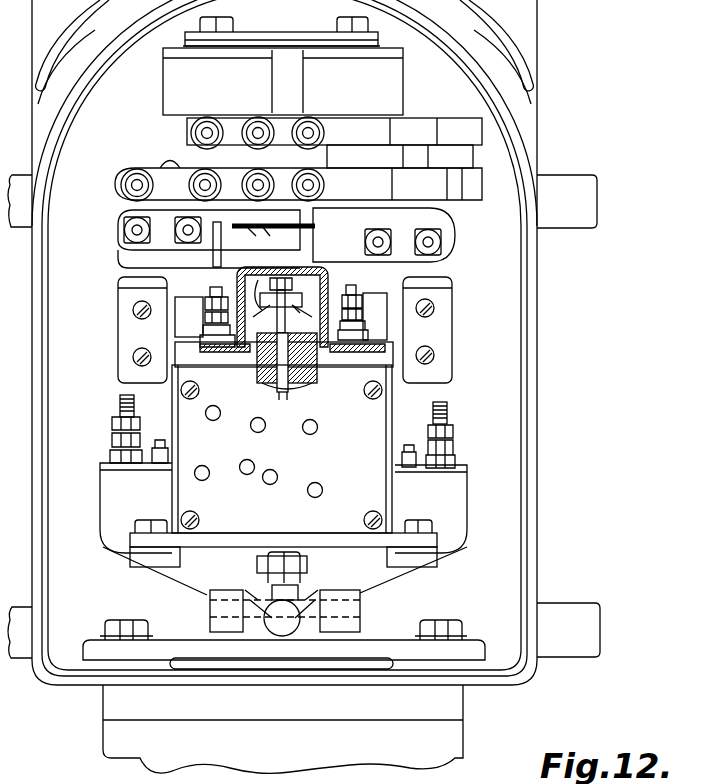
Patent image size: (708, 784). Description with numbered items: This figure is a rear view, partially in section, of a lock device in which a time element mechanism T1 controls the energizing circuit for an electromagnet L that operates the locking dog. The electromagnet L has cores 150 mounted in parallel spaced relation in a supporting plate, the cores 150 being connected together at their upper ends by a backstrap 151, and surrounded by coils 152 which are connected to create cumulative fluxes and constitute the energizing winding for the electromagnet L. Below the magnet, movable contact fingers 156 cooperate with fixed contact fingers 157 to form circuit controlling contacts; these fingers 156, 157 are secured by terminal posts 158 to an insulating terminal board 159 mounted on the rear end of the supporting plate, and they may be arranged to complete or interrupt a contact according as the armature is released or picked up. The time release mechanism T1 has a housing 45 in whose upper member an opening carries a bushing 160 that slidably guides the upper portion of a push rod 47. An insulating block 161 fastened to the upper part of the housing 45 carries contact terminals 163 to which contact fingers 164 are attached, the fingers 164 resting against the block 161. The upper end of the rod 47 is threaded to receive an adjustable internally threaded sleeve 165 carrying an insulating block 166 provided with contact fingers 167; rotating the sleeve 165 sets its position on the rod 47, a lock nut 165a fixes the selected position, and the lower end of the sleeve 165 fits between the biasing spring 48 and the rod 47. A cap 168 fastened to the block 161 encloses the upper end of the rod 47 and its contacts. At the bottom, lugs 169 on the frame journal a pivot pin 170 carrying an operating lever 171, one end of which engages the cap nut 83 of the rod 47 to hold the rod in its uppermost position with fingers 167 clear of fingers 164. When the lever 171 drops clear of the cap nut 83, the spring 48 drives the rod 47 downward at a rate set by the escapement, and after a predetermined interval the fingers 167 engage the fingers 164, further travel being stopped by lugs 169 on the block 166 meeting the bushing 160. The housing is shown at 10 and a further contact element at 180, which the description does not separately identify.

The housing 10 is at (538, 133).
The housing 45 is at (393, 394).
The push rod 47 is at (282, 386).
The biasing spring 48 is at (296, 386).
The cap nut 83 is at (308, 563).
The cores 150 is at (190, 47).
The backstrap 151 is at (305, 32).
The coils 152 is at (270, 56).
The movable contact fingers 156 is at (333, 268).
The fixed contact fingers 157 is at (226, 266).
The terminal posts 158 is at (170, 232).
The insulating terminal board 159 is at (113, 180).
The bushing 160 is at (304, 378).
The insulating block 161 is at (222, 360).
The contact terminals 163 is at (207, 287).
The contact fingers 164 is at (249, 370).
The adjustable internally threaded sleeve 165 is at (283, 274).
The lock nut 165a is at (264, 223).
The insulating block 166 is at (260, 270).
The contact fingers 167 is at (292, 300).
The cap 168 is at (284, 265).
The lugs 169 is at (358, 627).
The pivot pin 170 is at (358, 598).
The operating lever 171 is at (290, 592).
The contact 180 is at (304, 321).
The electromagnet L is at (163, 72).
The time element mechanism T1 is at (170, 495).